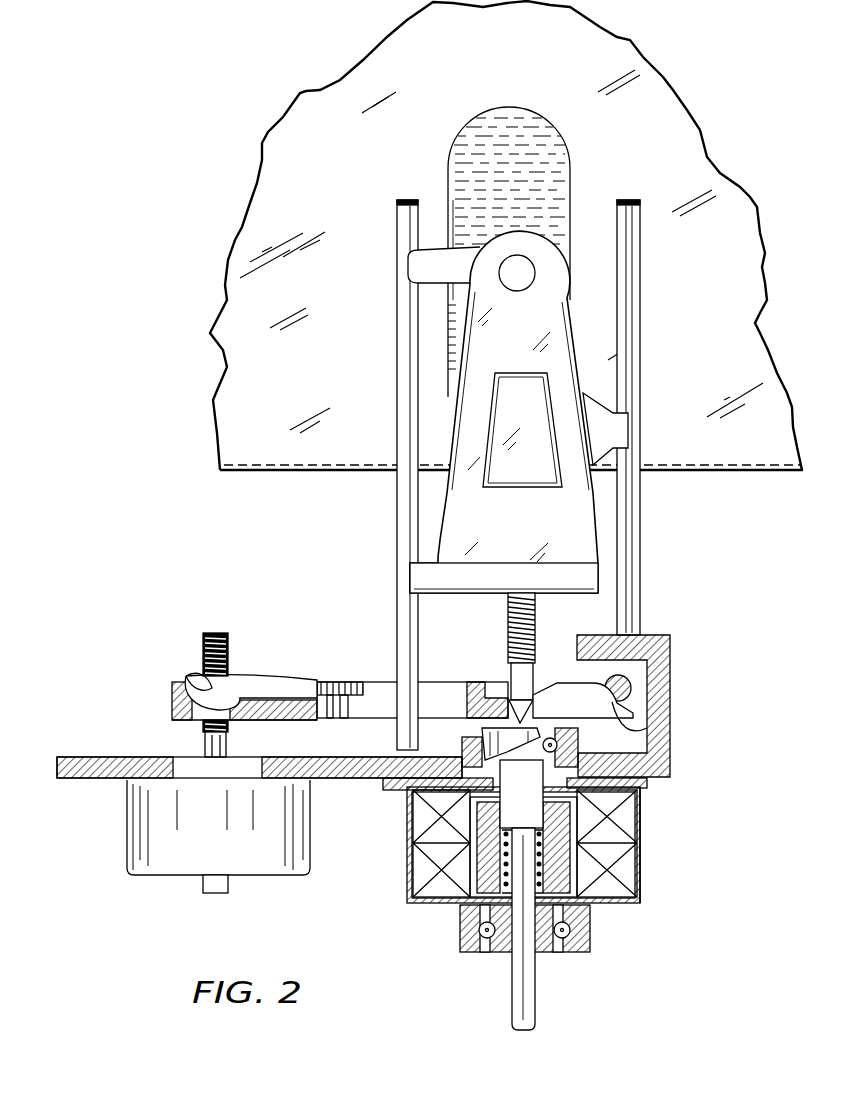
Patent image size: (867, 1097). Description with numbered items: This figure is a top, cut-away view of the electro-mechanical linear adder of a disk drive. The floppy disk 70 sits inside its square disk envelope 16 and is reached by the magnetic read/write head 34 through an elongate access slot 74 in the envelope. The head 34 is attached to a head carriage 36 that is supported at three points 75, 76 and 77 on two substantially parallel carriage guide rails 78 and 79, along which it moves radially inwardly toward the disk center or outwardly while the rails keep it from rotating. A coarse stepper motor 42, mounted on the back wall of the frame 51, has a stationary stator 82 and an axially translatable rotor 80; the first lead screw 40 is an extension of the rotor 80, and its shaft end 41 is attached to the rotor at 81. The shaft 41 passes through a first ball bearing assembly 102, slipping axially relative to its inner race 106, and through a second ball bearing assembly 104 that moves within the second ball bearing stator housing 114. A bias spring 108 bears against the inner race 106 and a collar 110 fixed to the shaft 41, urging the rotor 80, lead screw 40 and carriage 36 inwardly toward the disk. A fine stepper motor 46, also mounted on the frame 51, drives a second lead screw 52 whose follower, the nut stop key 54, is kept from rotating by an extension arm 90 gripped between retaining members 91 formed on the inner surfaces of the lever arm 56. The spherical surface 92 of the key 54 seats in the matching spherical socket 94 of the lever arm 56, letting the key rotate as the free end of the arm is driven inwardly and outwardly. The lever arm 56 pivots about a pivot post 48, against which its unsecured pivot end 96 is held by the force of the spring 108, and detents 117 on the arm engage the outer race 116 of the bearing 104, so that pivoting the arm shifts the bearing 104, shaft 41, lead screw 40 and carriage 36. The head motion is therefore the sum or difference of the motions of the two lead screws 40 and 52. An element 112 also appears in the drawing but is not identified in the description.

The disk envelope 16 is at (262, 480).
The magnetic read/write head 34 is at (522, 265).
The head carriage 36 is at (498, 351).
The first lead screw 40 is at (528, 640).
The shaft end 41 is at (520, 975).
The first stepper motor 42 is at (640, 880).
The second stepper motor 46 is at (160, 876).
The pivot post 48 is at (632, 688).
The frame 51 is at (97, 785).
The second lead screw 52 is at (222, 632).
The second lead screw follower (nut stop key) 54 is at (190, 672).
The lever arm 56 is at (388, 690).
The floppy disk 70 is at (497, 140).
The elongate access slots 74 is at (543, 130).
The support point 75 is at (630, 430).
The support point 76 is at (414, 270).
The support point 77 is at (414, 578).
The carriage guide rail 78 is at (403, 212).
The carriage guide rail 79 is at (641, 262).
The rotor 80 is at (460, 900).
The attachment point 81 is at (470, 805).
The stator 82 is at (610, 855).
The extension arm 90 is at (328, 682).
The retaining members 91 is at (350, 708).
The spherical surface 92 is at (188, 690).
The lever arm socket 94 is at (175, 700).
The pivot end 96 is at (650, 722).
The first ball bearing assembly 102 is at (561, 944).
The second ball bearing assembly 104 is at (524, 768).
The inner race 106 is at (552, 955).
The spring 108 is at (590, 905).
The collar 110 is at (560, 812).
The latch wedge 112 is at (545, 730).
The second ball bearing stator housing 114 is at (380, 790).
The outer race 116 is at (400, 828).
The detents 117 is at (513, 700).